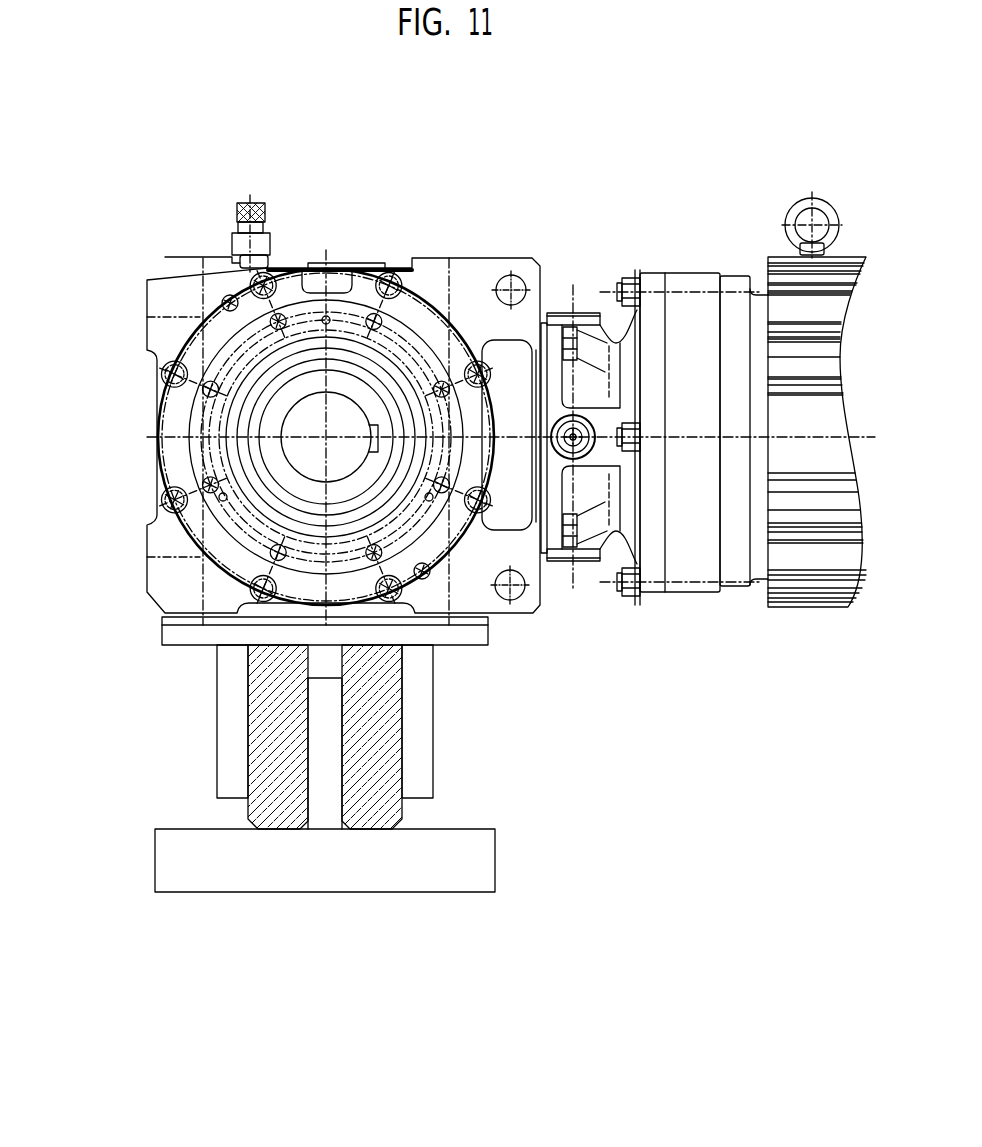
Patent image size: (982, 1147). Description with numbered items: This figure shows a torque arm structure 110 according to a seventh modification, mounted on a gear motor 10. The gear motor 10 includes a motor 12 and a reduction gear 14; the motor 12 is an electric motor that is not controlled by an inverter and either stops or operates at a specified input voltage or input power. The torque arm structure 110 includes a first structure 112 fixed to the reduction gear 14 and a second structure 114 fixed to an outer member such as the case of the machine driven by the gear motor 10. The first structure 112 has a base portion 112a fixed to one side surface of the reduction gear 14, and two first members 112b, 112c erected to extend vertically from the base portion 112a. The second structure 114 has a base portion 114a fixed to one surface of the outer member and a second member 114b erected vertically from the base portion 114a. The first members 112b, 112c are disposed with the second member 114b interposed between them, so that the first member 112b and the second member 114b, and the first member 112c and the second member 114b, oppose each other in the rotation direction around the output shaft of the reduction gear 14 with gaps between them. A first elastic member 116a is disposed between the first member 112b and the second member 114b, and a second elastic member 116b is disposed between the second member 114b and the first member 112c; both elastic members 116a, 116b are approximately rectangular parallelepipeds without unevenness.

The gear motor 10 is at (675, 190).
The reduction gear 14 is at (485, 283).
The motor 12 is at (783, 275).
The torque arm structure 110 is at (688, 623).
The first structure 112 is at (88, 657).
The base portion 112a is at (192, 632).
The first member 112b is at (232, 707).
The first member 112c is at (420, 735).
The second structure 114 is at (578, 747).
The base portion 114a is at (448, 845).
The second member 114b is at (325, 787).
The first elastic member 116a is at (278, 803).
The second elastic member 116b is at (377, 803).